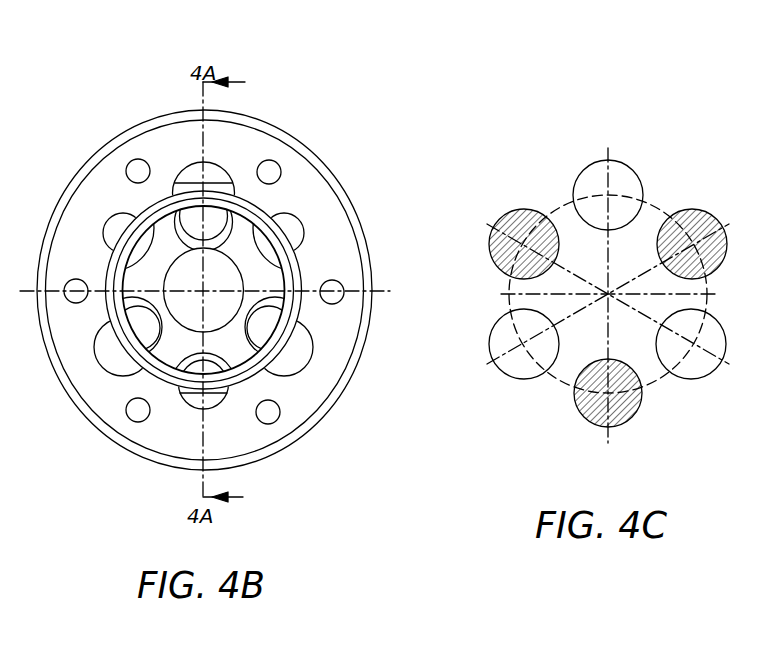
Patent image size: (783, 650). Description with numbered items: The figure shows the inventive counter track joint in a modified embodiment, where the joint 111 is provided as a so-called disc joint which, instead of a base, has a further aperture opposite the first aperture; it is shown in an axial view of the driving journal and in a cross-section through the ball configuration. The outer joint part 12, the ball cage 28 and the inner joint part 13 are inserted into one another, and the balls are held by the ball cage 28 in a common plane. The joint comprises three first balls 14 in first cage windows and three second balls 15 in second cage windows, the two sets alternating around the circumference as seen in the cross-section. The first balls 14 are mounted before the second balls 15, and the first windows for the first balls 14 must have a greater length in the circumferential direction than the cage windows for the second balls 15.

In FIG. 4B, the joint 111 is at (221, 271).
In FIG. 4B, the outer joint part 12 is at (318, 182).
In FIG. 4B, the ball cage 28 is at (298, 278).
In FIG. 4B, the inner joint part 13 is at (281, 293).
In FIG. 4B, the first balls 14 is at (197, 370).
In FIG. 4C, the first balls 14 is at (598, 418).
In FIG. 4B, the second balls 15 is at (200, 160).
In FIG. 4C, the second balls 15 is at (620, 180).